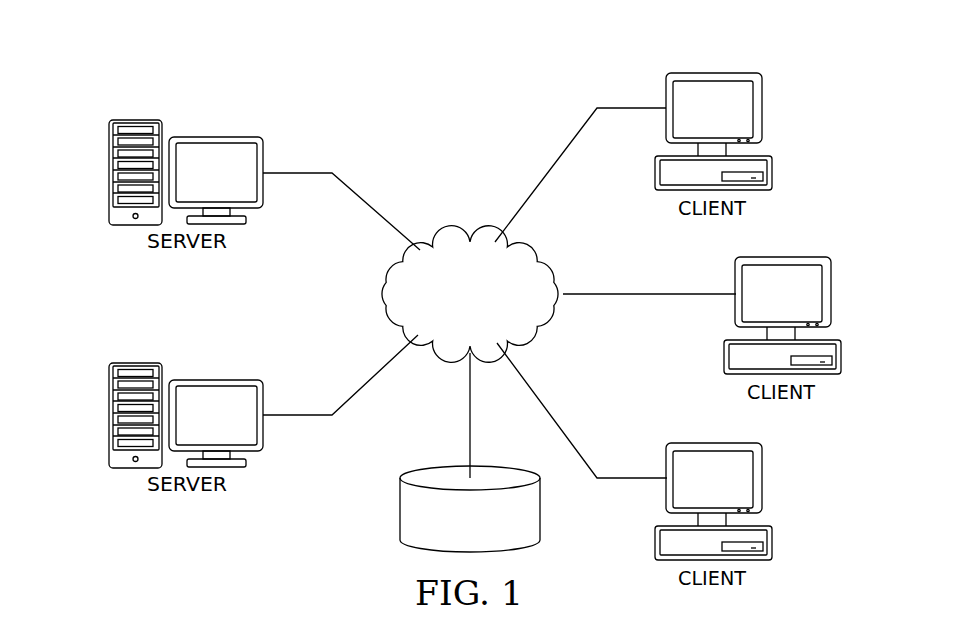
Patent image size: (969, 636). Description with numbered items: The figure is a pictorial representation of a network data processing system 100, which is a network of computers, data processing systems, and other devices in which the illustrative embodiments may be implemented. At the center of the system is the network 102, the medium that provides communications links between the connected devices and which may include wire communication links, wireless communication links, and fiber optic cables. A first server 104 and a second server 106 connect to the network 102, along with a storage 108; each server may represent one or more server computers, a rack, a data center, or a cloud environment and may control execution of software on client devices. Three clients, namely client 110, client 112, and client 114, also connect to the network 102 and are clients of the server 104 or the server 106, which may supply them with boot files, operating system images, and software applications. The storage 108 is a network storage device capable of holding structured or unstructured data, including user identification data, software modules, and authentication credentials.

The network data processing system 100 is at (338, 77).
The network 102 is at (446, 240).
The server 104 is at (109, 172).
The server 106 is at (109, 412).
The storage 108 is at (401, 508).
The client 110 is at (772, 172).
The client 112 is at (842, 357).
The client 114 is at (772, 543).